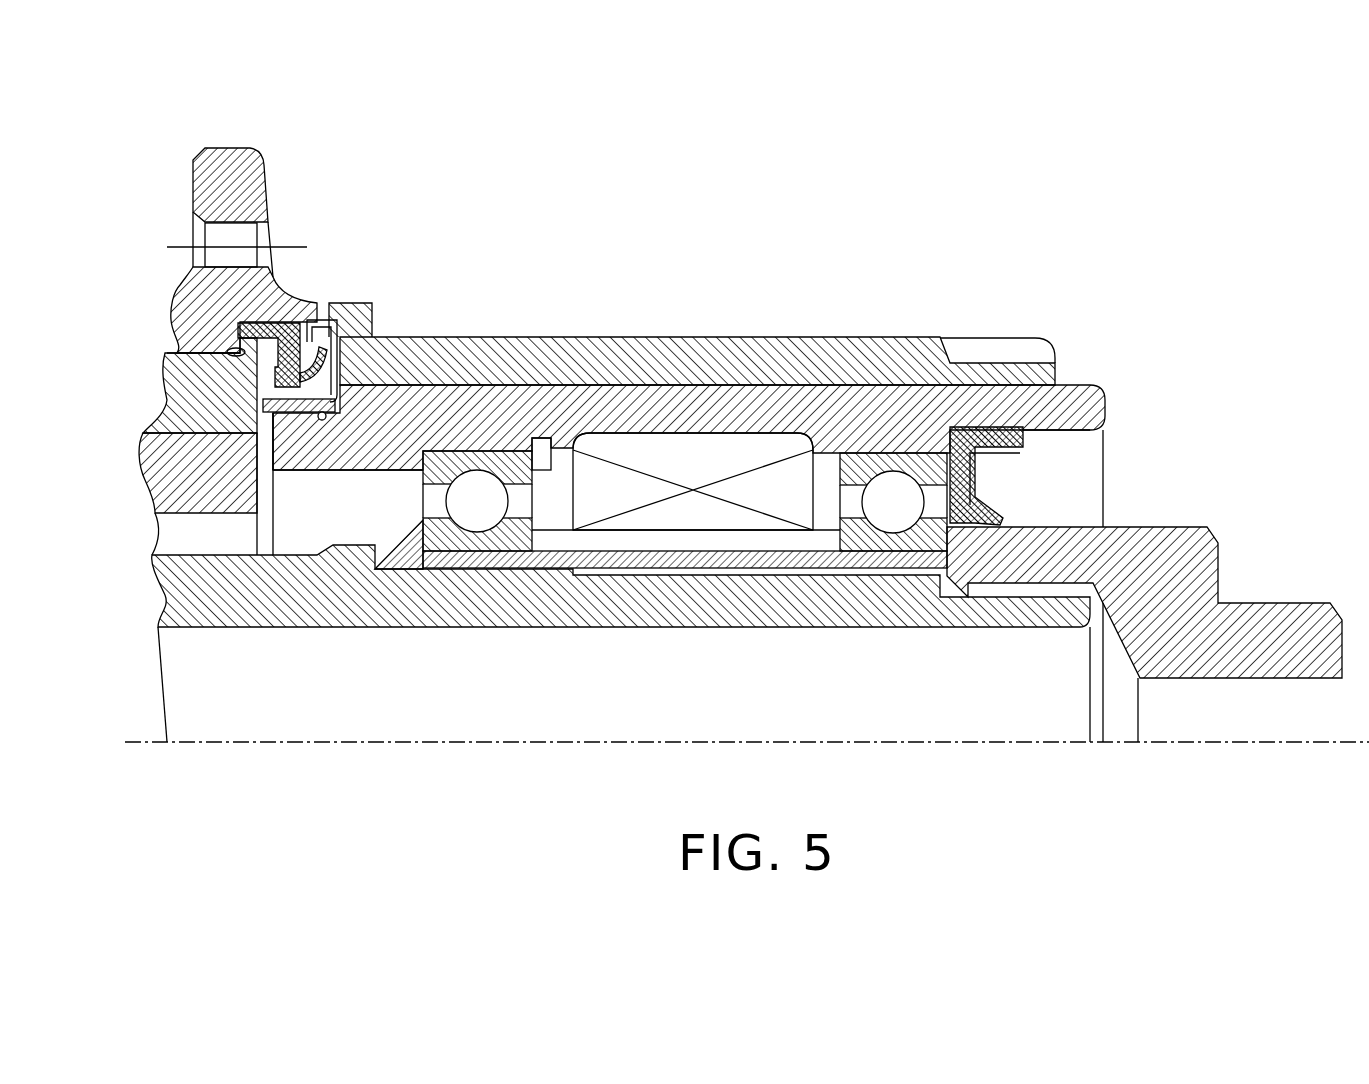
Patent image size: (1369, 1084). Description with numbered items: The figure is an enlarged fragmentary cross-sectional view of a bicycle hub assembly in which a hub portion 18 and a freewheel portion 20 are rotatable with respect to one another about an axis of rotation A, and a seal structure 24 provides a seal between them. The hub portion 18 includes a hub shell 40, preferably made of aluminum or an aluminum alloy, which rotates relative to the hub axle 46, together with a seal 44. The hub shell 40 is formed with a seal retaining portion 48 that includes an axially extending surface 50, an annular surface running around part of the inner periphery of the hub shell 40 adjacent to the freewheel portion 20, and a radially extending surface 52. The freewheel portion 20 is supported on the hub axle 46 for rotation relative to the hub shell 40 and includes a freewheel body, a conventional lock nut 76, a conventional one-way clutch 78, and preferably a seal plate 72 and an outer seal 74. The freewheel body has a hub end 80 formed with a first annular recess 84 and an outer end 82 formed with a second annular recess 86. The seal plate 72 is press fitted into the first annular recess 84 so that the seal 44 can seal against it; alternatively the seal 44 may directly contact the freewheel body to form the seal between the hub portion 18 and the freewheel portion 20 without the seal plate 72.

The hub portion 18 is at (225, 202).
The freewheel portion 20 is at (681, 330).
The seal structure 24 is at (256, 298).
The hub shell 40 is at (203, 197).
The seal 44 is at (314, 308).
The hub axle 46 is at (521, 607).
The seal retaining portion 48 is at (250, 380).
The axially extending surface 50 is at (277, 322).
The radially extending surface 52 is at (232, 355).
The seal plate 72 is at (347, 455).
The outer seal 74 is at (976, 496).
The lock nut 76 is at (1188, 568).
The one-way clutch 78 is at (697, 506).
The hub end 80 is at (360, 327).
The outer end 82 is at (1078, 413).
The first annular recess 84 is at (264, 447).
The second annular recess 86 is at (1040, 428).
The axis of rotation A is at (785, 738).